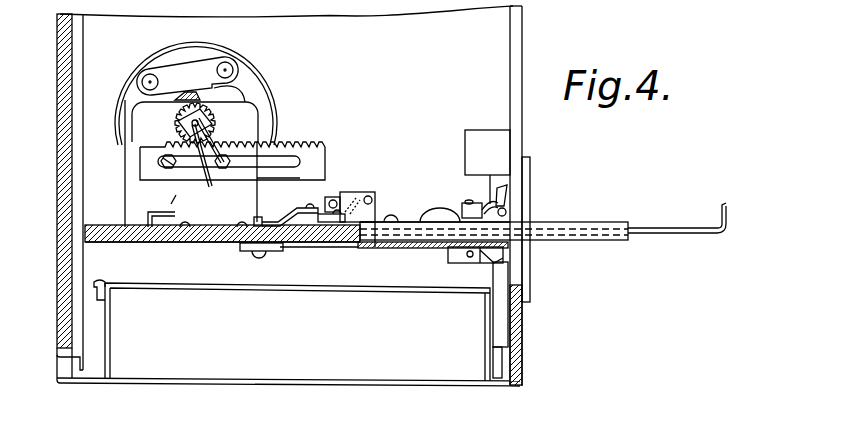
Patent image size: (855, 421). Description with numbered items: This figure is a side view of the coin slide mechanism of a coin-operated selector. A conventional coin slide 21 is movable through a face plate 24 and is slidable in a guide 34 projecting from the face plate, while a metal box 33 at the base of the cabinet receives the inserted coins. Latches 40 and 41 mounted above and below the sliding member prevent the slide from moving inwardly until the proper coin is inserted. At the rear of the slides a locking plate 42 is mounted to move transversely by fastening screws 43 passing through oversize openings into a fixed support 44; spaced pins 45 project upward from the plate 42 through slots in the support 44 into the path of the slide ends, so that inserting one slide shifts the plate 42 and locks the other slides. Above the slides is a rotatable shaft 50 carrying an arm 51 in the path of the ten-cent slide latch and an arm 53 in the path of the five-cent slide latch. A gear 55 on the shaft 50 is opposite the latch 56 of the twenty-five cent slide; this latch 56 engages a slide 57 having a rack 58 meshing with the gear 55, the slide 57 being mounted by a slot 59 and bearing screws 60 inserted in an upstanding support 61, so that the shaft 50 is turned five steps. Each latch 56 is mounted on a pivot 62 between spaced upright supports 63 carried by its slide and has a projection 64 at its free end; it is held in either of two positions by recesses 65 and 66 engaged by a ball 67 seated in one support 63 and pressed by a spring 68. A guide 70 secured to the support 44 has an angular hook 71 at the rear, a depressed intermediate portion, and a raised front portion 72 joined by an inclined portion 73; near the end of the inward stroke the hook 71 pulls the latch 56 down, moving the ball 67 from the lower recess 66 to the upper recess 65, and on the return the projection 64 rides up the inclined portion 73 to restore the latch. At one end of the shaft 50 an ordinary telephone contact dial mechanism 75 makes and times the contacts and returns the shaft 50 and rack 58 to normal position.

The coin slide 21 is at (651, 228).
The face plate 24 is at (530, 203).
The metal box 33 is at (110, 325).
The guide 34 is at (610, 240).
The latch 40 is at (500, 258).
The latch 41 is at (507, 190).
The locking plate 42 is at (246, 251).
The fastening screws 43 is at (260, 262).
The fixed support 44 is at (185, 243).
The pins 45 is at (315, 228).
The rotatable shaft 50 is at (173, 125).
The arm 51 is at (205, 184).
The arm 53 is at (207, 168).
The gear 55 is at (212, 118).
The latch 56 is at (364, 194).
The slide 57 is at (326, 151).
The rack 58 is at (278, 142).
The slot 59 is at (245, 164).
The bearing screws 60 is at (232, 146).
The upstanding support 61 is at (140, 114).
The pivot 62 is at (376, 200).
The upright supports 63 is at (362, 246).
The pin or projection 64 is at (318, 214).
The recess 65 is at (343, 192).
The recess 66 is at (354, 192).
The ball 67 is at (360, 192).
The spring 68 is at (338, 196).
The guide 70 is at (158, 228).
The angular hook 71 is at (167, 203).
The raised front portion 72 is at (300, 210).
The inclined portion 73 is at (283, 215).
The telephone contact dial mechanism 75 is at (226, 60).